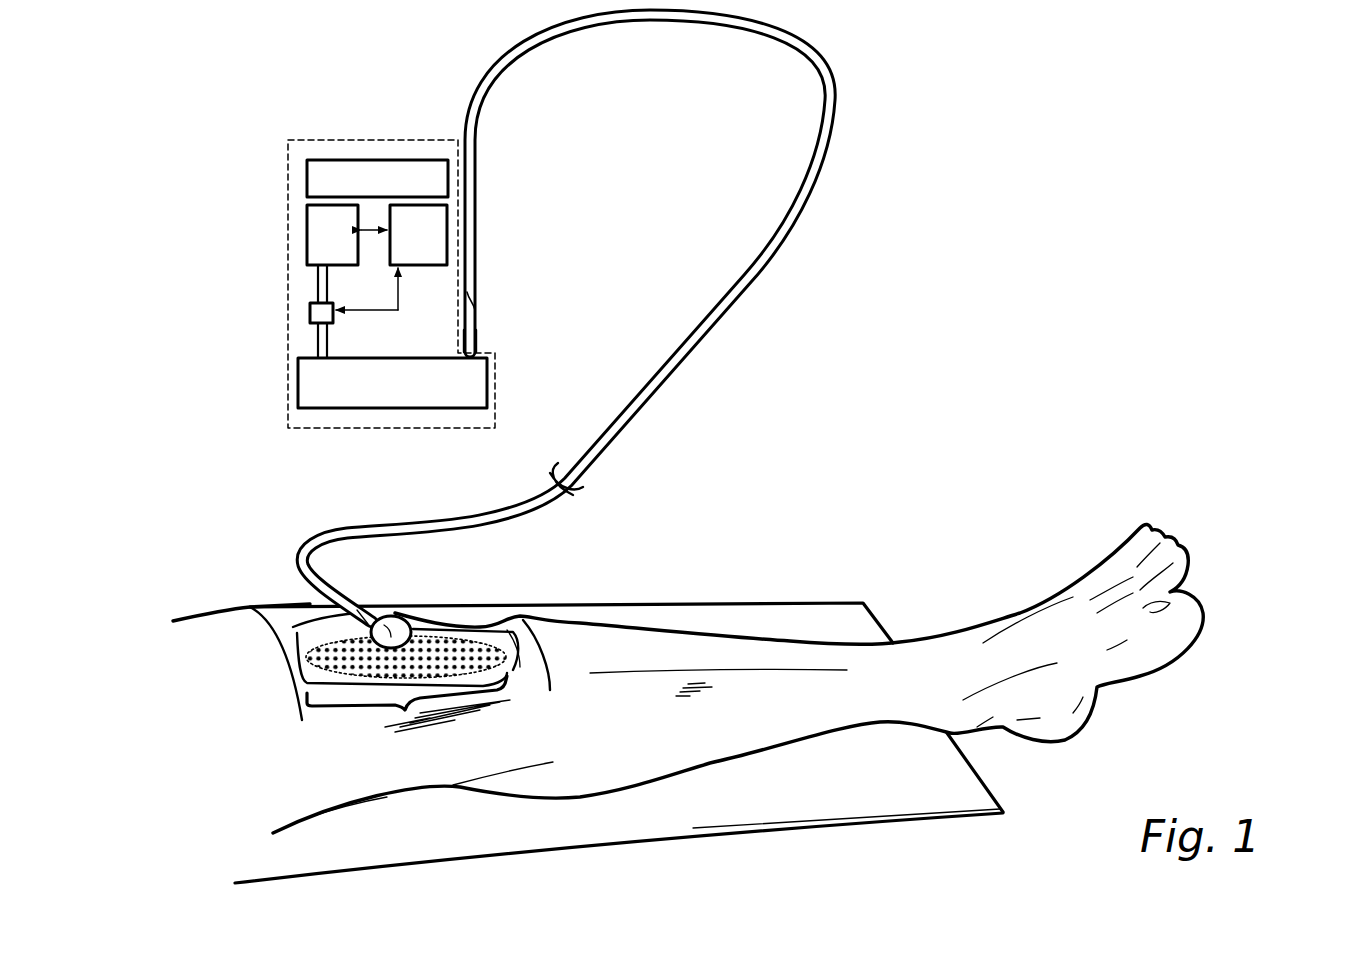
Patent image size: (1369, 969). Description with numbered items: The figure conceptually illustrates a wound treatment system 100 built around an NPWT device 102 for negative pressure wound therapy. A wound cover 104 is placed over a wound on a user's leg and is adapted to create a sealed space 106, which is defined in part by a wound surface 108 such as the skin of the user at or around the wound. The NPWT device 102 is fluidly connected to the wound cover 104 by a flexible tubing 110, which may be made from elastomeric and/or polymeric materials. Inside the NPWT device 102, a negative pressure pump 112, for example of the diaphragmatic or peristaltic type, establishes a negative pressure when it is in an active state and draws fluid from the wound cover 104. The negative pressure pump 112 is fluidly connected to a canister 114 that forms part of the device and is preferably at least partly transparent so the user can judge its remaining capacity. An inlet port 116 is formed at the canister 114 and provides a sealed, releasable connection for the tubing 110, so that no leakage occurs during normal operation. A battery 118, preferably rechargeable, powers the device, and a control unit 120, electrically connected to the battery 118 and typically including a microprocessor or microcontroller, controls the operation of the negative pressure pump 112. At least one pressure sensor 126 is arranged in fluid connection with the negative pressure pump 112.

The wound treatment system 100 is at (1245, 90).
The NPWT device 102 is at (433, 140).
The wound cover 104 is at (290, 680).
The sealed space 106 is at (530, 680).
The wound surface 108 is at (405, 708).
The tubing 110 is at (742, 278).
The negative pressure pump 112 is at (307, 242).
The canister 114 is at (307, 388).
The inlet port 116 is at (477, 345).
The battery 118 is at (337, 160).
The control unit 120 is at (447, 230).
The pressure sensor 126 is at (310, 310).